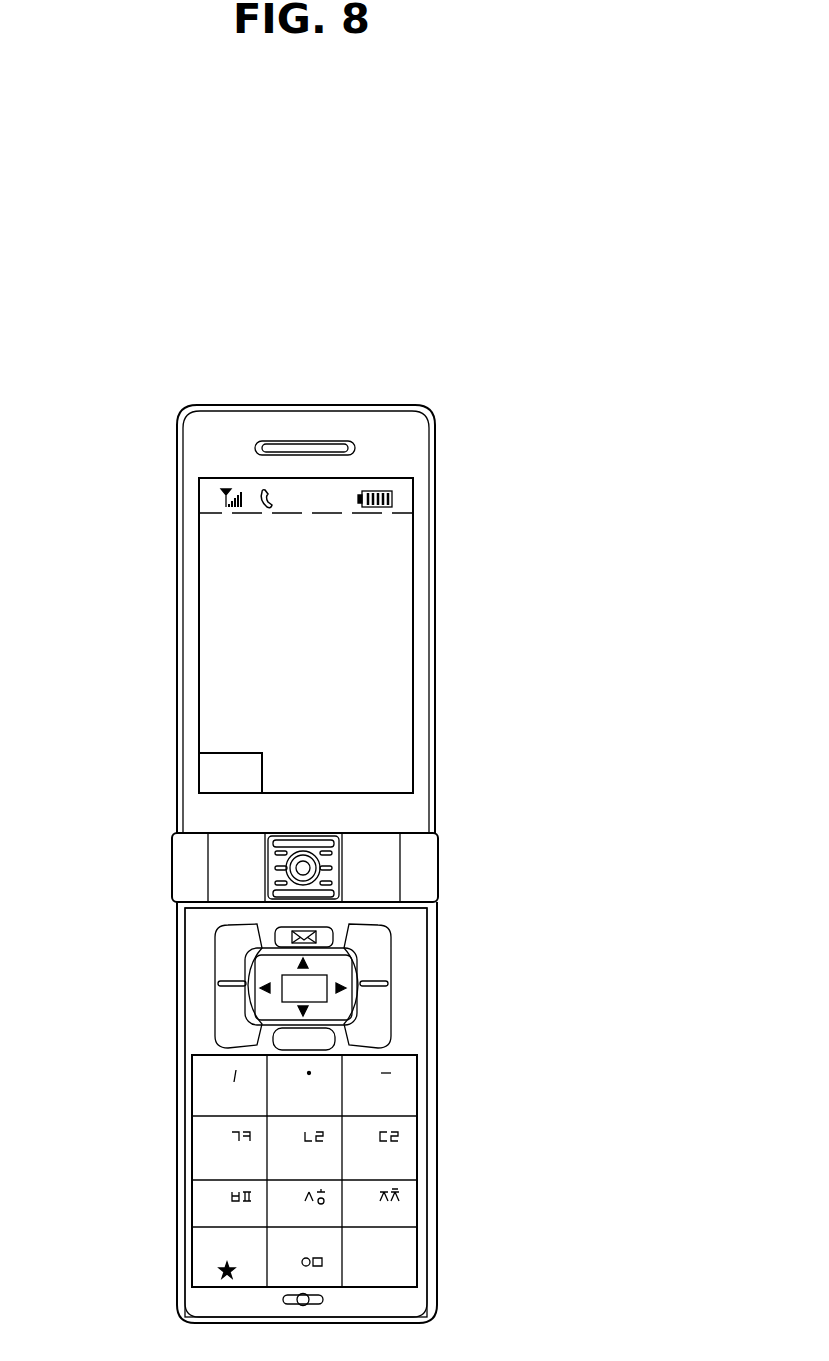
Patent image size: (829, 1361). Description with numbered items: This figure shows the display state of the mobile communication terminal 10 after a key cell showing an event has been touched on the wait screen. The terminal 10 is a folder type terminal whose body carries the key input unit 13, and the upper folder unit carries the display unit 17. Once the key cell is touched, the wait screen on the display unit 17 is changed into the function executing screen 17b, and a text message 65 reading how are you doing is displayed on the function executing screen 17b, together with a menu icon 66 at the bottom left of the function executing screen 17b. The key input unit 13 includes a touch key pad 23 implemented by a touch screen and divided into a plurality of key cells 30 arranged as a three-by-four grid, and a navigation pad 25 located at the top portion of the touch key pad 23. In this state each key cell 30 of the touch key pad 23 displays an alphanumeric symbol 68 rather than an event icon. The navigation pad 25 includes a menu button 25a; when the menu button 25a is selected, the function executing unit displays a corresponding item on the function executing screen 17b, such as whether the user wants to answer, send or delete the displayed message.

The mobile communication terminal 10 is at (393, 338).
The display unit 17 is at (197, 661).
The function executing screen 17b is at (394, 620).
The text message 65 is at (214, 603).
The menu icon 66 is at (222, 748).
The key input unit 13 is at (97, 1085).
The touch key pad 23 is at (200, 1141).
The navigation pad 25 is at (207, 1013).
The menu button 25a is at (219, 928).
The key cell 30 is at (198, 1205).
The alphanumeric symbol 68 is at (404, 1140).